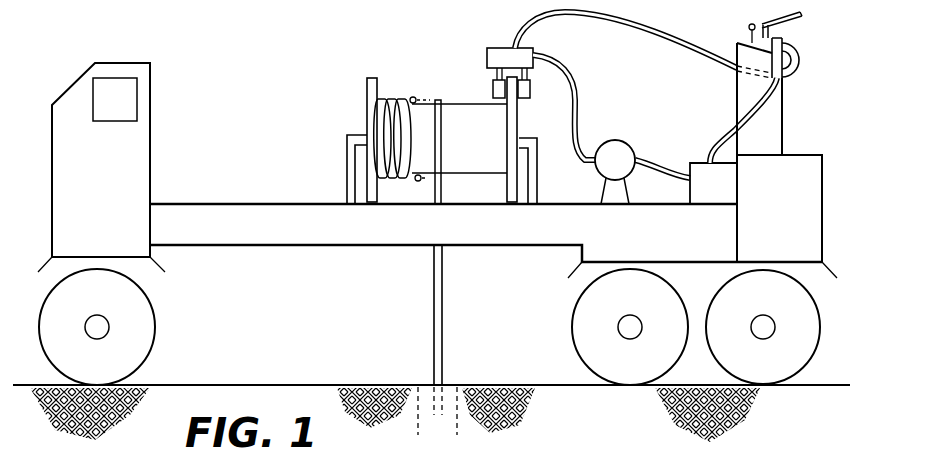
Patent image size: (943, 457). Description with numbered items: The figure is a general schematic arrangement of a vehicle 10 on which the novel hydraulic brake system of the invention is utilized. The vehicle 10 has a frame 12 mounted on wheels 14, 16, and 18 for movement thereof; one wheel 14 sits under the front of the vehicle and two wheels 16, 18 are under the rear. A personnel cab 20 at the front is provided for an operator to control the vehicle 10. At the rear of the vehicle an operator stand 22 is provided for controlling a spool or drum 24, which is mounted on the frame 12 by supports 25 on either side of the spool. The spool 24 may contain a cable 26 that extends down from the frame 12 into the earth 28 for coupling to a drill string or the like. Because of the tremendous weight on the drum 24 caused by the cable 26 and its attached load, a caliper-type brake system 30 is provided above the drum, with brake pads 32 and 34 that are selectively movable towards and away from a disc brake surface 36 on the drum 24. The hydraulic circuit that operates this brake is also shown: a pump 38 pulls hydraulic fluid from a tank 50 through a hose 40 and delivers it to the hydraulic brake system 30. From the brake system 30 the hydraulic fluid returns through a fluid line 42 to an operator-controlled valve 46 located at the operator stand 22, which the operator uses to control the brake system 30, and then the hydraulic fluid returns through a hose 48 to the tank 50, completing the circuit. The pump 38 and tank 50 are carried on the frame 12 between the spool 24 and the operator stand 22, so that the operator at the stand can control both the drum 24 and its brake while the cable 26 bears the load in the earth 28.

The vehicle 10 is at (208, 50).
The frame 12 is at (240, 210).
The wheel 14 is at (140, 325).
The wheel 16 is at (584, 338).
The wheel 18 is at (795, 355).
The personnel cab 20 is at (133, 142).
The operator stand 22 is at (800, 138).
The spool or drum 24 is at (350, 104).
The supports 25 is at (347, 167).
The cable 26 is at (432, 275).
The earth 28 is at (368, 383).
The caliper-type brake system 30 is at (484, 43).
The brake pad 32 is at (492, 90).
The brake pad 34 is at (531, 88).
The disc brake surface 36 is at (508, 148).
The pump 38 is at (630, 143).
The hose 40 is at (576, 116).
The fluid line 42 is at (628, 38).
The operator-controlled valve 46 is at (740, 28).
The hose 48 is at (722, 126).
The tank 50 is at (716, 190).